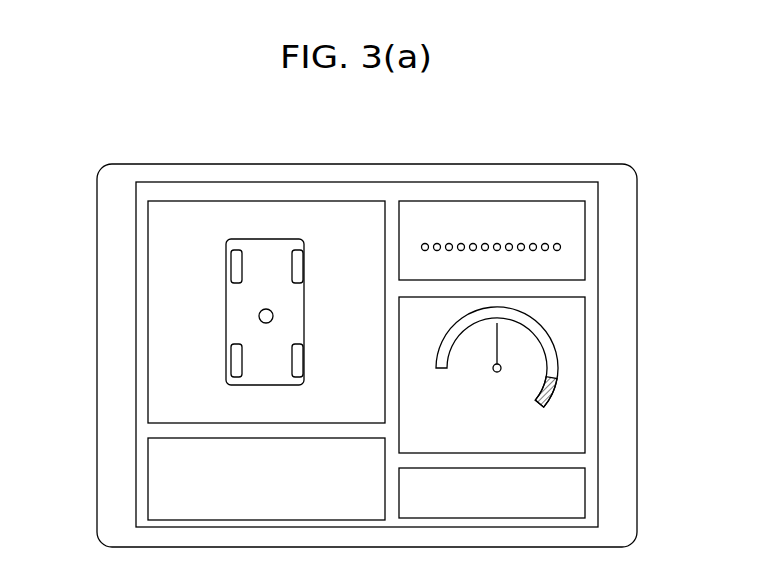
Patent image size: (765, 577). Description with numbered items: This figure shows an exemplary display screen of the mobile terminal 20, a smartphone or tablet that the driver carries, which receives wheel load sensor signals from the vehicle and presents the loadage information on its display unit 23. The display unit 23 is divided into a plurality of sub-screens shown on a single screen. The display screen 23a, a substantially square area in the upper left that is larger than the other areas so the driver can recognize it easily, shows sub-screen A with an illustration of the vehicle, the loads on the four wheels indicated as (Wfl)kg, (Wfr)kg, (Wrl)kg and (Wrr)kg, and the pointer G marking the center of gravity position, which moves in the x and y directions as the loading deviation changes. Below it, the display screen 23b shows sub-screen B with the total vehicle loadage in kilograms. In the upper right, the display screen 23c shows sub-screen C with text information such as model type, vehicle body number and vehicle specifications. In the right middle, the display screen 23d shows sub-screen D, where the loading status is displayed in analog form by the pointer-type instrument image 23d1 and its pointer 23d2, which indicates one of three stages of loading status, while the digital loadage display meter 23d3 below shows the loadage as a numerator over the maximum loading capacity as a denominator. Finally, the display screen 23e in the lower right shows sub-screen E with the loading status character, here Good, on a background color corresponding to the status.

The mobile terminal 20 is at (617, 373).
The display unit 23 is at (593, 325).
The display screen 23a is at (243, 213).
The display screen 23b is at (175, 492).
The display screen 23c is at (482, 222).
The display screen 23d is at (549, 342).
The instrument image 23d1 is at (527, 320).
The pointer 23d2 is at (501, 344).
The digital loadage display meter 23d3 is at (558, 432).
The display screen 23e is at (567, 492).